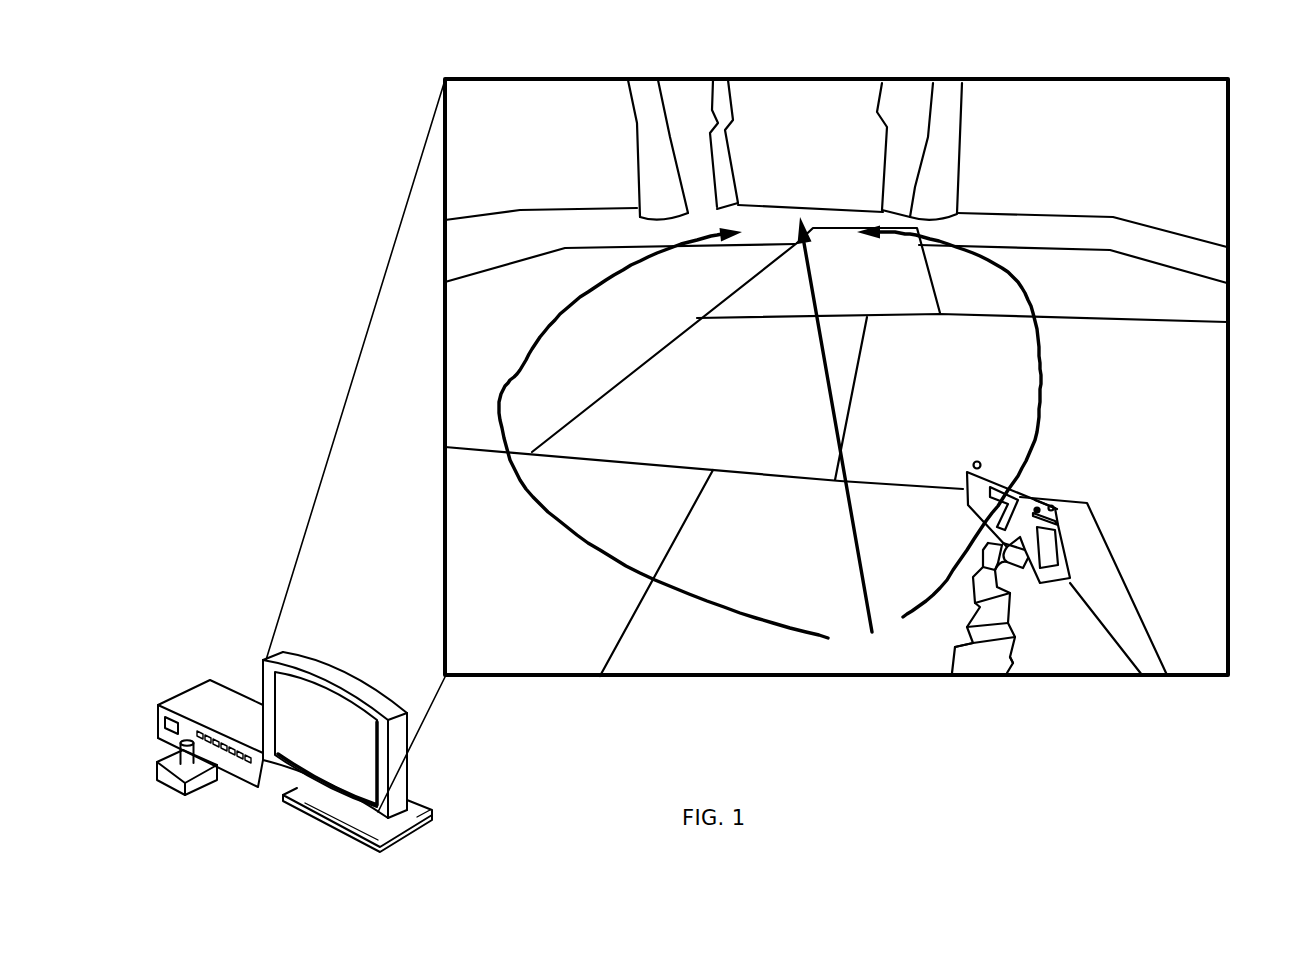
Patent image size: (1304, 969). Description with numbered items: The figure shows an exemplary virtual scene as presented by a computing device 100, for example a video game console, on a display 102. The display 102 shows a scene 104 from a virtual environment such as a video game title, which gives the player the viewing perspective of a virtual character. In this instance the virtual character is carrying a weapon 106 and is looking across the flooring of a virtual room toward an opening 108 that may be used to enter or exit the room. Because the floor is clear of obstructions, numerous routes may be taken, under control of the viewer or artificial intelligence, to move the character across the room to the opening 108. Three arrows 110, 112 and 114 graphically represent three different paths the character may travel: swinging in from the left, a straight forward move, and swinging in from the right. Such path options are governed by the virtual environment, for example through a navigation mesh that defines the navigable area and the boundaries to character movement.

The computing device 100 is at (229, 612).
The display 102 is at (350, 677).
The scene 104 is at (1230, 177).
The weapon 106 is at (975, 522).
The opening 108 is at (821, 156).
The arrow 110 is at (518, 374).
The arrow 112 is at (825, 388).
The arrow 114 is at (1044, 364).